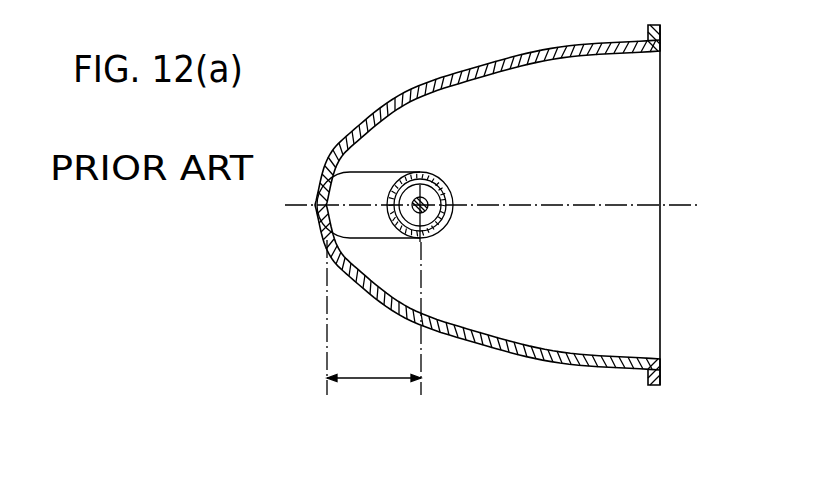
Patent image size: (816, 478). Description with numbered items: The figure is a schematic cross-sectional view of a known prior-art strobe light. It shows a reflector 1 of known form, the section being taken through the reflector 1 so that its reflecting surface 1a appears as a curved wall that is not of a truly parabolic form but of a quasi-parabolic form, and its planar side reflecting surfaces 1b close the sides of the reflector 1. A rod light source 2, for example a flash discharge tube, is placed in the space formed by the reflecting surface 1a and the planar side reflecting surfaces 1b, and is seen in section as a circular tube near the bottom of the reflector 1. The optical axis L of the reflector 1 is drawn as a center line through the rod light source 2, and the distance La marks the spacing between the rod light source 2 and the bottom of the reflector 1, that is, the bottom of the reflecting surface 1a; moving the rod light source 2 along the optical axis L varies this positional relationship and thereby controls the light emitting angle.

The reflector 1 is at (430, 79).
The reflecting surface 1a is at (408, 106).
The planar side reflecting surfaces 1b is at (610, 268).
The rod light source 2 is at (390, 190).
The optical axis L is at (680, 202).
The distance La is at (370, 380).